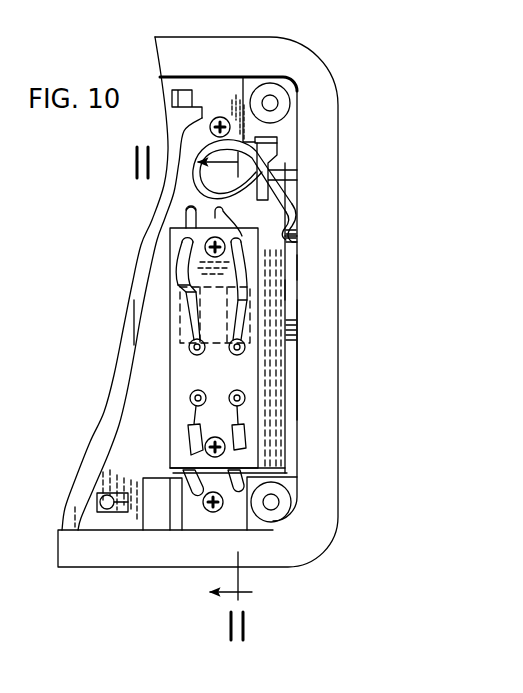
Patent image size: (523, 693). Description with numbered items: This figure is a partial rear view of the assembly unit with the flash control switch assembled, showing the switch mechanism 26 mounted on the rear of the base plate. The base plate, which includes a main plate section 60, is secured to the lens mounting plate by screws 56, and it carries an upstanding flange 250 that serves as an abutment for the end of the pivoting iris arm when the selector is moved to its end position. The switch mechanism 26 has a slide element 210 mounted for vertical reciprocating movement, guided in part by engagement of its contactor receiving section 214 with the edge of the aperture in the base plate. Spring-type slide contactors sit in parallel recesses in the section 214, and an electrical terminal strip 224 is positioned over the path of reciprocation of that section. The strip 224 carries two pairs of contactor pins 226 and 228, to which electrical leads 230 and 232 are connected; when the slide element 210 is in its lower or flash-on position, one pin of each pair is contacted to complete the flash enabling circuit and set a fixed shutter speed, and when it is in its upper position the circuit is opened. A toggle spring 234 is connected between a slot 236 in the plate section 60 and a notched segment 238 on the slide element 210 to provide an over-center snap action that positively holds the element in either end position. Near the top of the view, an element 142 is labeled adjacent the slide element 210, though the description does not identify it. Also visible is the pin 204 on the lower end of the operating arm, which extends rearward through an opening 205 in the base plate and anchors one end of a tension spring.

The screws 56 is at (209, 73).
The upstanding flange 250 is at (172, 95).
The bracket 142 is at (277, 136).
The toggle spring 234 is at (278, 194).
The slot 236 is at (295, 207).
The notched segment 238 is at (293, 240).
The slide element 210 is at (299, 267).
The main plate section 60 is at (288, 290).
The electrical leads 230 is at (218, 212).
The contactor receiving section 214 is at (185, 370).
The electrical terminal strip 224 is at (252, 324).
The contactor pins 226 is at (206, 352).
The contactor pins 228 is at (207, 398).
The electrical leads 232 is at (188, 478).
The switch mechanism 26 is at (160, 321).
The pin 204 is at (100, 502).
The opening 205 is at (125, 510).